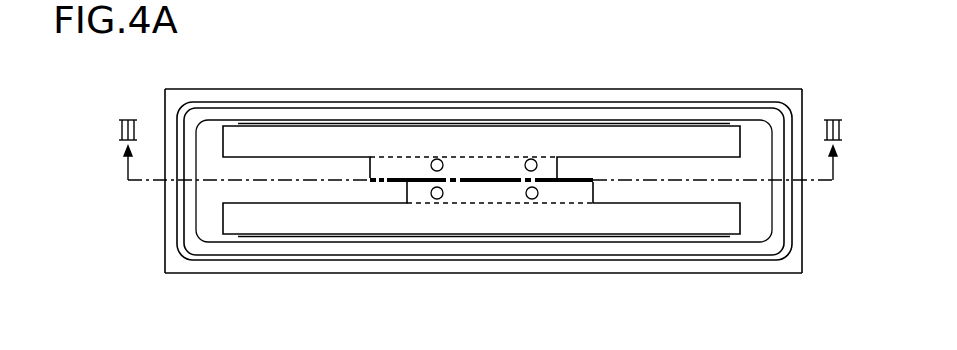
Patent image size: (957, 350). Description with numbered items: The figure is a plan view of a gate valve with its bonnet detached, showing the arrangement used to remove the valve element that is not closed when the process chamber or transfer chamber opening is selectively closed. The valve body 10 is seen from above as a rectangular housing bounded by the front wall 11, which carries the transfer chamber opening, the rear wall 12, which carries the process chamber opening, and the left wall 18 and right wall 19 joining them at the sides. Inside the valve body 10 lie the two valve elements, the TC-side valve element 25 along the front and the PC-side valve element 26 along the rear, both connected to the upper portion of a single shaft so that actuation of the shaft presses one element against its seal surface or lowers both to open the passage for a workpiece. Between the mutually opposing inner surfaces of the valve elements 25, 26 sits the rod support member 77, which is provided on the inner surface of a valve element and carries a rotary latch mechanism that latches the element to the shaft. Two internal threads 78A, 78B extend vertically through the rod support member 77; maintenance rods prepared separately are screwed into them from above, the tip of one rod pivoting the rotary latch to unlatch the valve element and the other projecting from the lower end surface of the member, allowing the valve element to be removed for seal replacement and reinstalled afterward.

The valve body 10 is at (163, 274).
The front wall 11 is at (272, 265).
The rear wall 12 is at (284, 93).
The left wall 18 is at (172, 208).
The right wall 19 is at (797, 215).
The TC-side valve element 25 is at (578, 222).
The PC-side valve element 26 is at (680, 141).
The rod support member 77 is at (492, 162).
The internal thread 78A is at (437, 159).
The internal thread 78B is at (531, 159).